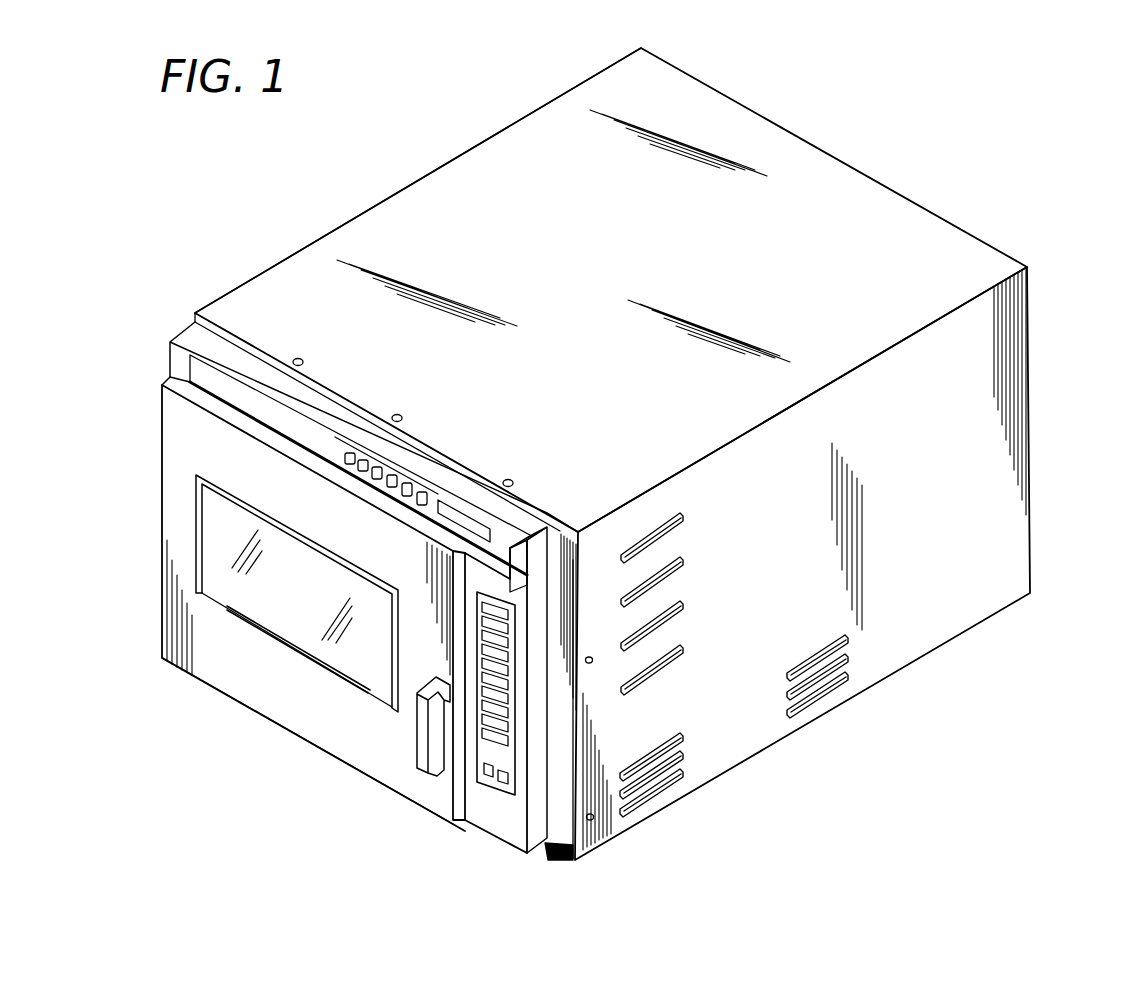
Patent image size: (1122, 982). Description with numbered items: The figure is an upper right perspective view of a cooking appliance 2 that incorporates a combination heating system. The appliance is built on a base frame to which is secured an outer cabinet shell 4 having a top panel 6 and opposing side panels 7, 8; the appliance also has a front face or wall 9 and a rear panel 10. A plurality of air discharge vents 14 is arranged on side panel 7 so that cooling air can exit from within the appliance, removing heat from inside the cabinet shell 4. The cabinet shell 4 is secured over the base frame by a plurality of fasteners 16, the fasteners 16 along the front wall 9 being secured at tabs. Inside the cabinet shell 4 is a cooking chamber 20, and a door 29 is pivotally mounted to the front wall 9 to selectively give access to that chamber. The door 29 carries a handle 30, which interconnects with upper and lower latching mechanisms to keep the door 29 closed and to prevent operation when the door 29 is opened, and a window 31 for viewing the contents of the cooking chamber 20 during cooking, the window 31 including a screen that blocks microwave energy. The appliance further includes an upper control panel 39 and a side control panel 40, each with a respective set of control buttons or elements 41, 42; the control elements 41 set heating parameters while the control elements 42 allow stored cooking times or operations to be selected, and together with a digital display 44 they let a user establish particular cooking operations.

The cooking appliance 2 is at (318, 190).
The outer cabinet shell 4 is at (698, 81).
The top panel 6 is at (627, 72).
The side panel 7 is at (1010, 323).
The side panel 8 is at (572, 92).
The front face or wall 9 is at (573, 830).
The rear panel 10 is at (900, 193).
The air discharge vents 14 is at (675, 638).
The fasteners 16 is at (298, 356).
The cooking chamber 20 is at (203, 631).
The door 29 is at (238, 678).
The handle 30 is at (420, 748).
The window 31 is at (210, 546).
The upper control panel 39 is at (467, 497).
The side control panel 40 is at (505, 823).
The control buttons or elements 41 is at (350, 448).
The control buttons or elements 42 is at (478, 780).
The digital display 44 is at (522, 535).